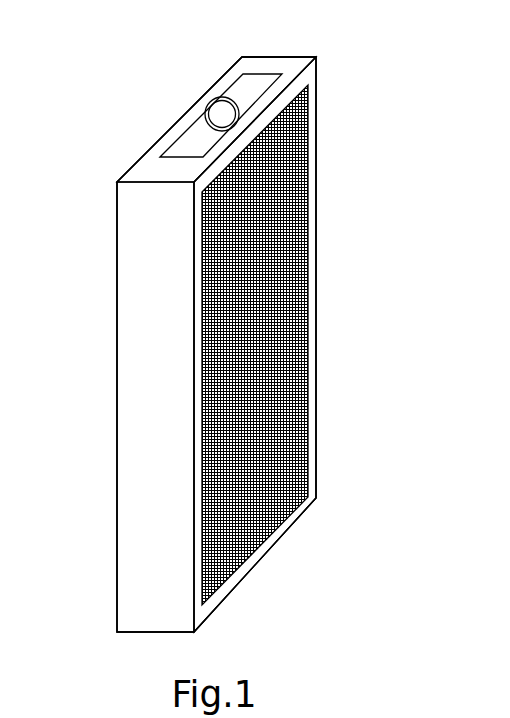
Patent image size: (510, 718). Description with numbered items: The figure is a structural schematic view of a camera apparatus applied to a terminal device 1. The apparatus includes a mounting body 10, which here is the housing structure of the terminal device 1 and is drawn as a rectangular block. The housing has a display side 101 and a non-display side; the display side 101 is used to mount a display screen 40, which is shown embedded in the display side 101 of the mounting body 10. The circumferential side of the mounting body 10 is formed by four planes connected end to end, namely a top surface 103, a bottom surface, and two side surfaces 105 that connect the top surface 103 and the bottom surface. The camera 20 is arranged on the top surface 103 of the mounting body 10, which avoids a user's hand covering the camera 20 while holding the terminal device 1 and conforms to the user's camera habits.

The terminal device 1 is at (216, 316).
The mounting body 10 is at (110, 282).
The camera 20 is at (220, 113).
The display screen 40 is at (287, 340).
The display side 101 is at (316, 179).
The top surface 103 is at (153, 173).
The side surfaces 105 is at (138, 398).